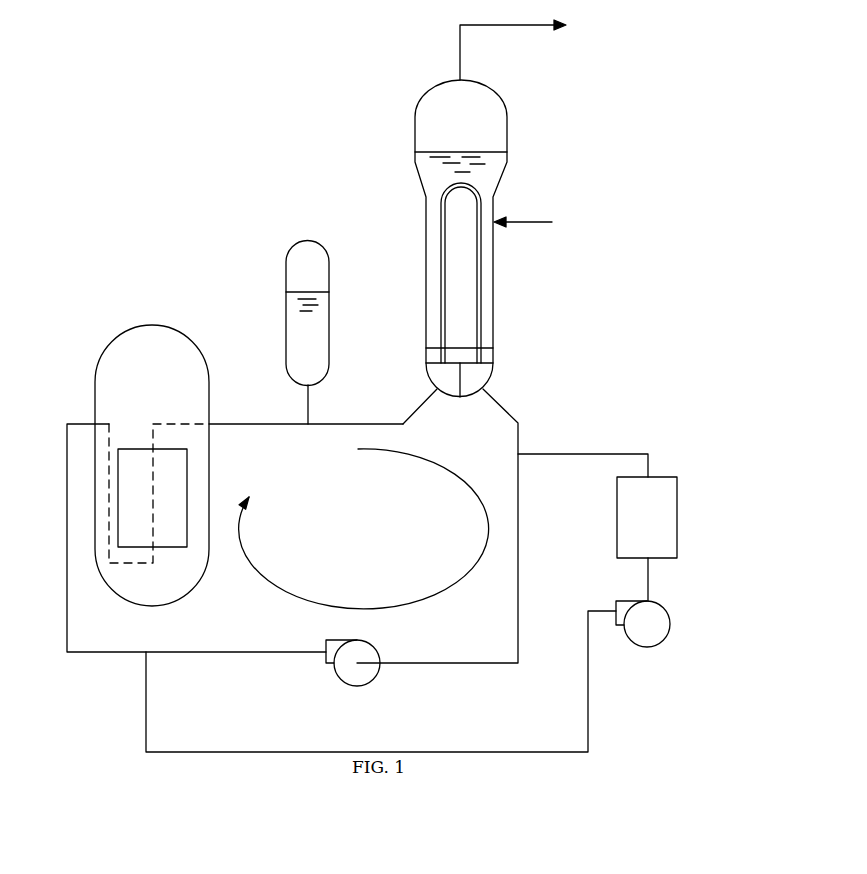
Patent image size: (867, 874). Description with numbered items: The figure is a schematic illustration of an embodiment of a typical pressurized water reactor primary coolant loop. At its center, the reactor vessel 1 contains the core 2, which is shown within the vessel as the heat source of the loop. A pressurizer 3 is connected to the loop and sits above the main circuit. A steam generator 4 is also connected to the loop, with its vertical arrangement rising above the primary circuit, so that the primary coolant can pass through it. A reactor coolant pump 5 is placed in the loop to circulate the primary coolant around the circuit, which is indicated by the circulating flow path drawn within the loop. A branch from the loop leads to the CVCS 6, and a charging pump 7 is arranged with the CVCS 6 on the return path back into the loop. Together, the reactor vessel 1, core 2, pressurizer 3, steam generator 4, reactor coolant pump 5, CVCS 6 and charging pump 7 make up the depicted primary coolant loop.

The reactor vessel 1 is at (113, 342).
The core 2 is at (133, 477).
The pressurizer 3 is at (289, 348).
The steam generator 4 is at (426, 228).
The reactor coolant pump 5 is at (338, 680).
The CVCS 6 is at (617, 497).
The charging pump 7 is at (671, 636).